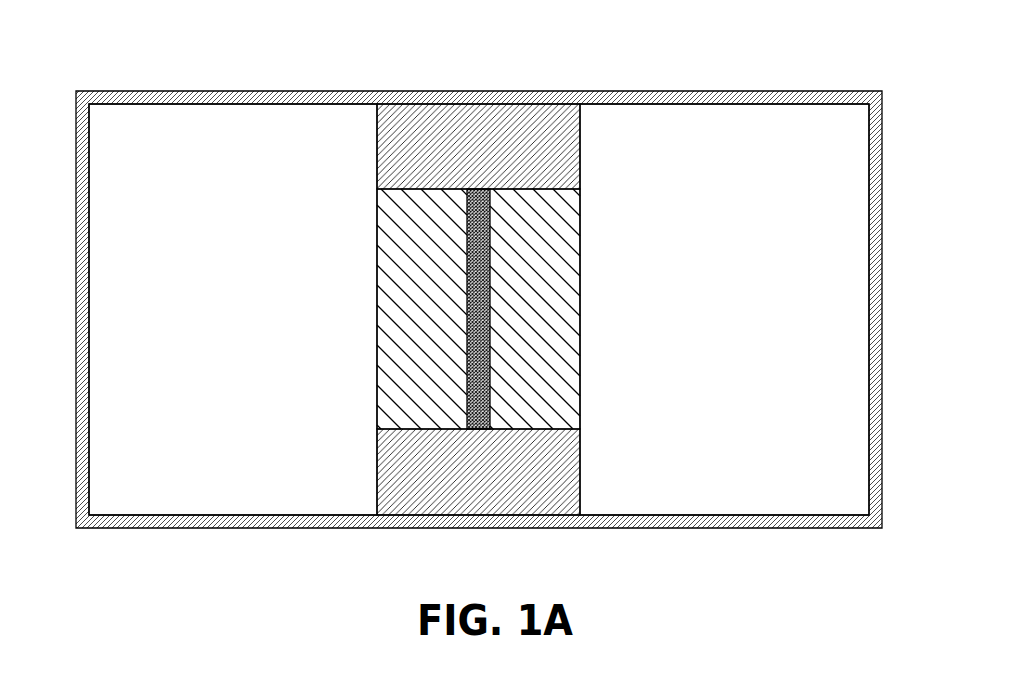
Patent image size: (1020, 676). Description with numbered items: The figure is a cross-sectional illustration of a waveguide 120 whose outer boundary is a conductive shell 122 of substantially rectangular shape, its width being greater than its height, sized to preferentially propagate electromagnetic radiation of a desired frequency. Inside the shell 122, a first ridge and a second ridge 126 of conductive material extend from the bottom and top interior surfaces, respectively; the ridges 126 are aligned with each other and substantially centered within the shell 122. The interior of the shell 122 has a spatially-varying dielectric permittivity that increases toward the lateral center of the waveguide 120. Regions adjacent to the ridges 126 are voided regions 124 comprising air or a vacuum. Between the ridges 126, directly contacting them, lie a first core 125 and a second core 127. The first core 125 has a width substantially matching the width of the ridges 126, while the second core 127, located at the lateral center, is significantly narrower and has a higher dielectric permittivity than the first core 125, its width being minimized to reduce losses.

The waveguide 120 is at (128, 36).
The shell 122 is at (710, 91).
The voided regions 124 is at (479, 309).
The first core 125 is at (563, 407).
The ridges 126 is at (488, 113).
The second core 127 is at (490, 268).